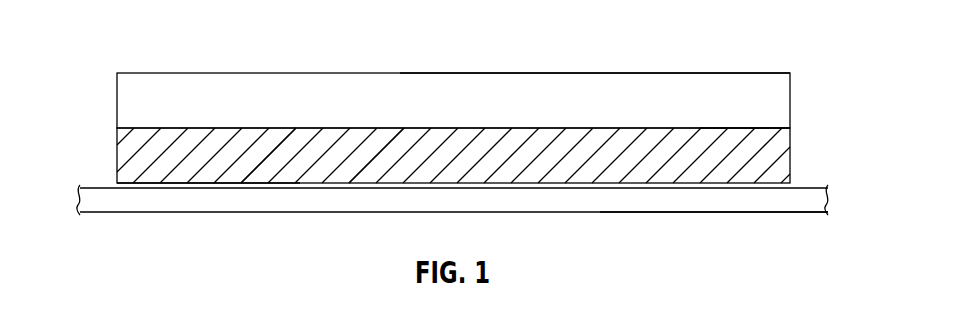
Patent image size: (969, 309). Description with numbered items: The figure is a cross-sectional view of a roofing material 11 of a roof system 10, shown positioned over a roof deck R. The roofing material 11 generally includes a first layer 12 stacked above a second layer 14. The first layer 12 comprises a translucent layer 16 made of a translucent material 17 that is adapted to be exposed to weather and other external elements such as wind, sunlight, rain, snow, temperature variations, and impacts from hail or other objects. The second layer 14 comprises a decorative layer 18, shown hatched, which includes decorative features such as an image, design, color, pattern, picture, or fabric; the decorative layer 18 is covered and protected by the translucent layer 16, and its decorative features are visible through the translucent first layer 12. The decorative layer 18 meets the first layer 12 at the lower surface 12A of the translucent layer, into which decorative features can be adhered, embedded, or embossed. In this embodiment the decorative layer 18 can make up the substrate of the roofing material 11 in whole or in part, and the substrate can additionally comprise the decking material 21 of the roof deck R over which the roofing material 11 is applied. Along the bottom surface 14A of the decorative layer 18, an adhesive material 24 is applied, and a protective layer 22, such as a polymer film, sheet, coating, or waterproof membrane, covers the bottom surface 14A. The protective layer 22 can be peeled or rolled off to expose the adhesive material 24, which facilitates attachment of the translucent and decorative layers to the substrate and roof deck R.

The roof system 10 is at (138, 31).
The roofing material 11 is at (511, 66).
The first layer 12 is at (750, 96).
The lower surface 12A is at (765, 128).
The second layer 14 is at (118, 160).
The bottom surface 14A is at (357, 156).
The translucent layer 16 is at (468, 114).
The translucent material 17 is at (642, 85).
The decorative layer 18 is at (467, 164).
The decking material 21 is at (755, 212).
The protective layer 22 is at (176, 186).
The adhesive material 24 is at (253, 176).
The roof deck R is at (837, 199).